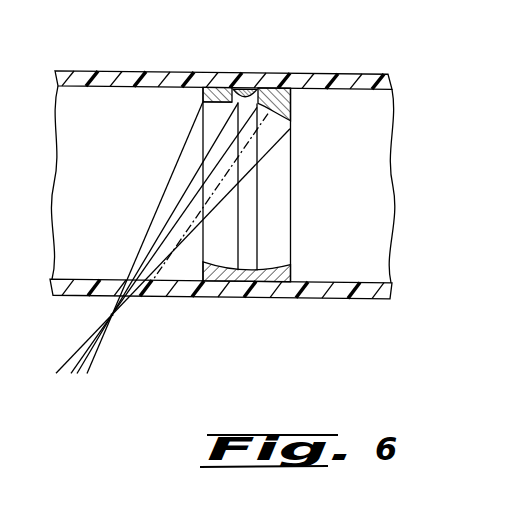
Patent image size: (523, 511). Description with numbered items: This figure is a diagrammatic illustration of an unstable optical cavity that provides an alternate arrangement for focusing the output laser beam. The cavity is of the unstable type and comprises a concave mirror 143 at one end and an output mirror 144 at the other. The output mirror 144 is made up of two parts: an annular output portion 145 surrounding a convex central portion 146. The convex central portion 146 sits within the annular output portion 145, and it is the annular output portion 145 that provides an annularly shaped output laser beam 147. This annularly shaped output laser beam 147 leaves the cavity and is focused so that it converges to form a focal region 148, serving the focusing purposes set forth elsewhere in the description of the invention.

The concave mirror 143 is at (291, 266).
The output mirror 144 is at (189, 101).
The annular output portion 145 is at (276, 112).
The convex central portion 146 is at (248, 88).
The output laser beam 147 is at (147, 233).
The focal region 148 is at (113, 316).